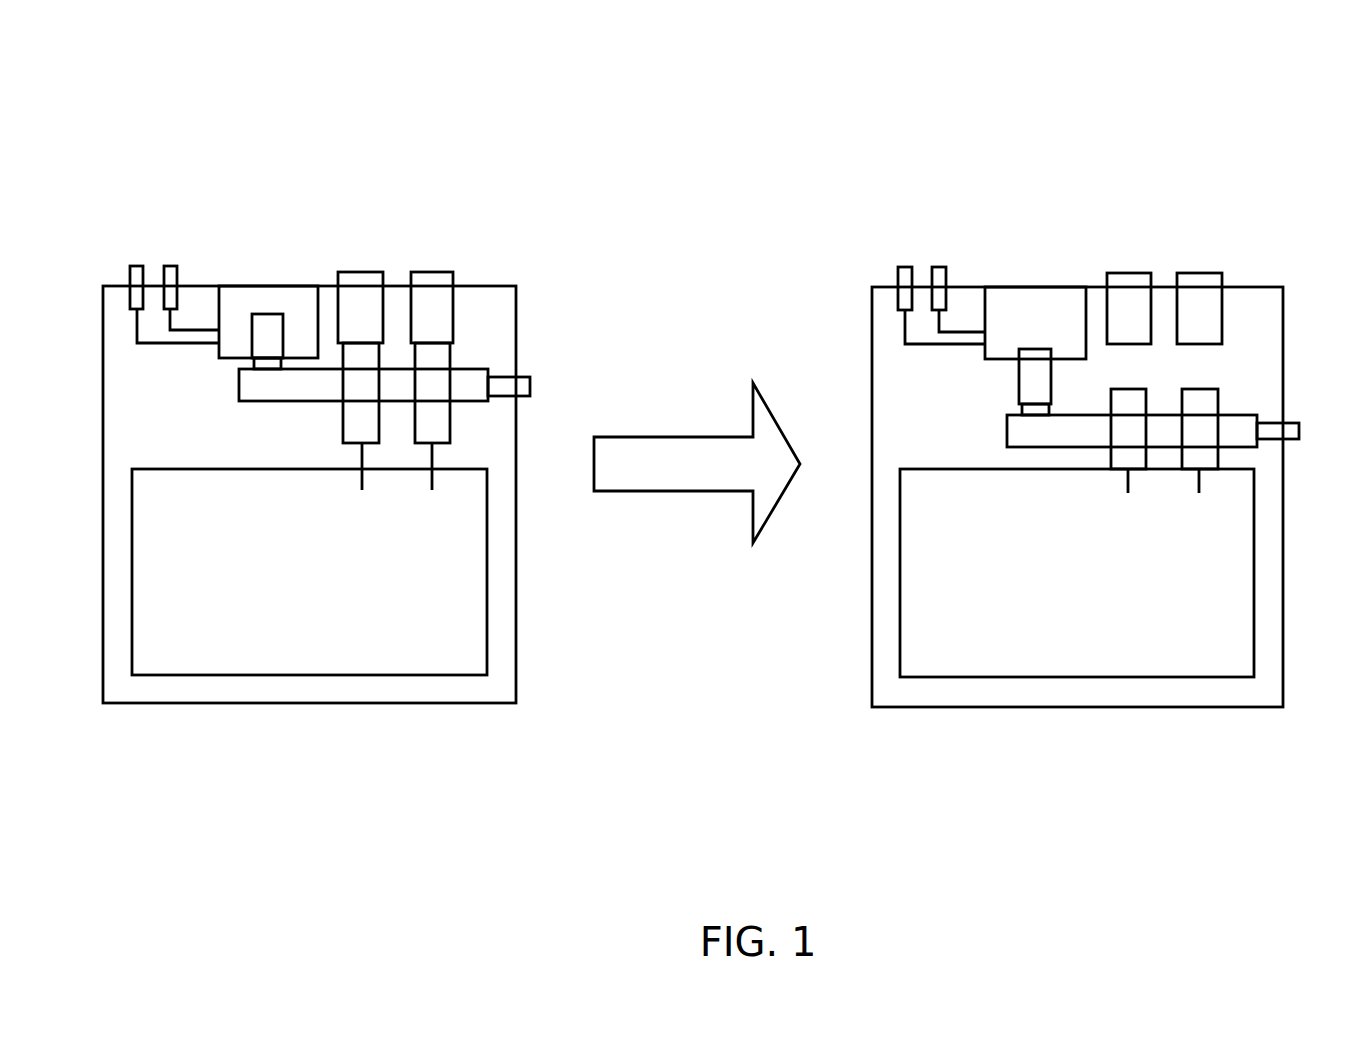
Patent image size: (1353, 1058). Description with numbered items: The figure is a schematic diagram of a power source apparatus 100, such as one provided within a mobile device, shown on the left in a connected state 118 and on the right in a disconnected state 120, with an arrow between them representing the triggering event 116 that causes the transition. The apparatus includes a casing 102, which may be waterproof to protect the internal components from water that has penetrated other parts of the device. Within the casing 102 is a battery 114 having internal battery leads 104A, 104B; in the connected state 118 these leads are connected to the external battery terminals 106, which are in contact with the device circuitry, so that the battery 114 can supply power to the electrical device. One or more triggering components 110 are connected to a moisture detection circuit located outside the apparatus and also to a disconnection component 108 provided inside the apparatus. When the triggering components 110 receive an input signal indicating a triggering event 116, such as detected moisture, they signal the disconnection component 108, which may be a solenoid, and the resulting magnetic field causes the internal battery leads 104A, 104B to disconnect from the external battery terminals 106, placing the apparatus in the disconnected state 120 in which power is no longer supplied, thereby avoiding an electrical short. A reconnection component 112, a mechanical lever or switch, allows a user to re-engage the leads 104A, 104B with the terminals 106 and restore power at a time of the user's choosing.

The power source apparatus 100 is at (441, 459).
The casing 102 is at (475, 285).
The internal battery lead 104A is at (452, 360).
The internal battery lead 104B is at (371, 445).
The external battery terminals 106 is at (435, 268).
The disconnection component 108 is at (262, 298).
The triggering components 110 is at (172, 266).
The reconnection component 112 is at (530, 388).
The battery 114 is at (292, 675).
The triggering event 116 is at (640, 491).
The connected state 118 is at (441, 459).
The disconnected state 120 is at (1085, 748).